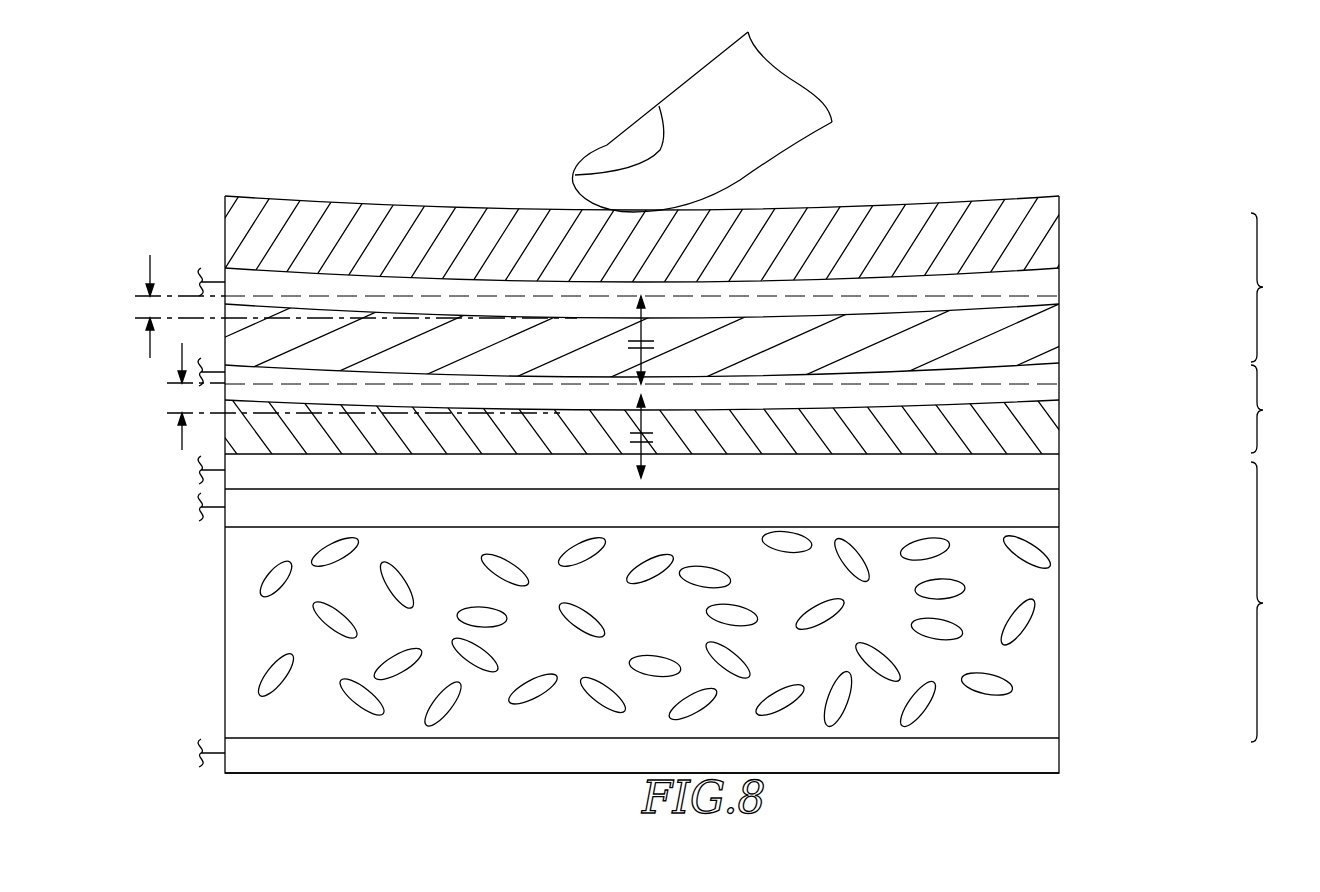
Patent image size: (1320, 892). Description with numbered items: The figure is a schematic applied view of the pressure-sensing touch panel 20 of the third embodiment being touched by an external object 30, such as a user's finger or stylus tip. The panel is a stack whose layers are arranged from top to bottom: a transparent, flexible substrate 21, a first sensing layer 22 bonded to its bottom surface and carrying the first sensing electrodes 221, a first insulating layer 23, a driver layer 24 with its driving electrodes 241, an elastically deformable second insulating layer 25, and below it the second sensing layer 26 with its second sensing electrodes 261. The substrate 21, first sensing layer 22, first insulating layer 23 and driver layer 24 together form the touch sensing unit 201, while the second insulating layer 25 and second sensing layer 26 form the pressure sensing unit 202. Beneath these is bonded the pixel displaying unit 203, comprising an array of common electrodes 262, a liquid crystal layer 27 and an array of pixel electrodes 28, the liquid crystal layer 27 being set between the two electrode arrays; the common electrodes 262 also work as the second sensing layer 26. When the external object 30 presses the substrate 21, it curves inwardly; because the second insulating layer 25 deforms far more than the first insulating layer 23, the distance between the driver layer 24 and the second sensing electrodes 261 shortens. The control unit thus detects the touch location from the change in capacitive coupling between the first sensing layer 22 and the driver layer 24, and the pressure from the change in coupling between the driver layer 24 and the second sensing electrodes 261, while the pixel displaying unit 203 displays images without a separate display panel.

The pressure-sensing touch panel 20 is at (970, 190).
The substrate 21 is at (1038, 238).
The first sensing layer 22 is at (1156, 262).
The first sensing electrodes 221 is at (1038, 288).
The first insulating layer 23 is at (1038, 347).
The driver layer 24 is at (1156, 368).
The driving electrodes 241 is at (1040, 390).
The second insulating layer 25 is at (1156, 410).
The second sensing layer 26 is at (1156, 460).
The second sensing electrodes 261 is at (1045, 477).
The array of common electrodes 262 is at (1045, 512).
The liquid crystal layer 27 is at (1045, 615).
The array of pixel electrodes 28 is at (1045, 760).
The external object 30 is at (615, 153).
The touch sensing unit 201 is at (1285, 287).
The pressure sensing unit 202 is at (1285, 409).
The pixel displaying unit 203 is at (1285, 602).